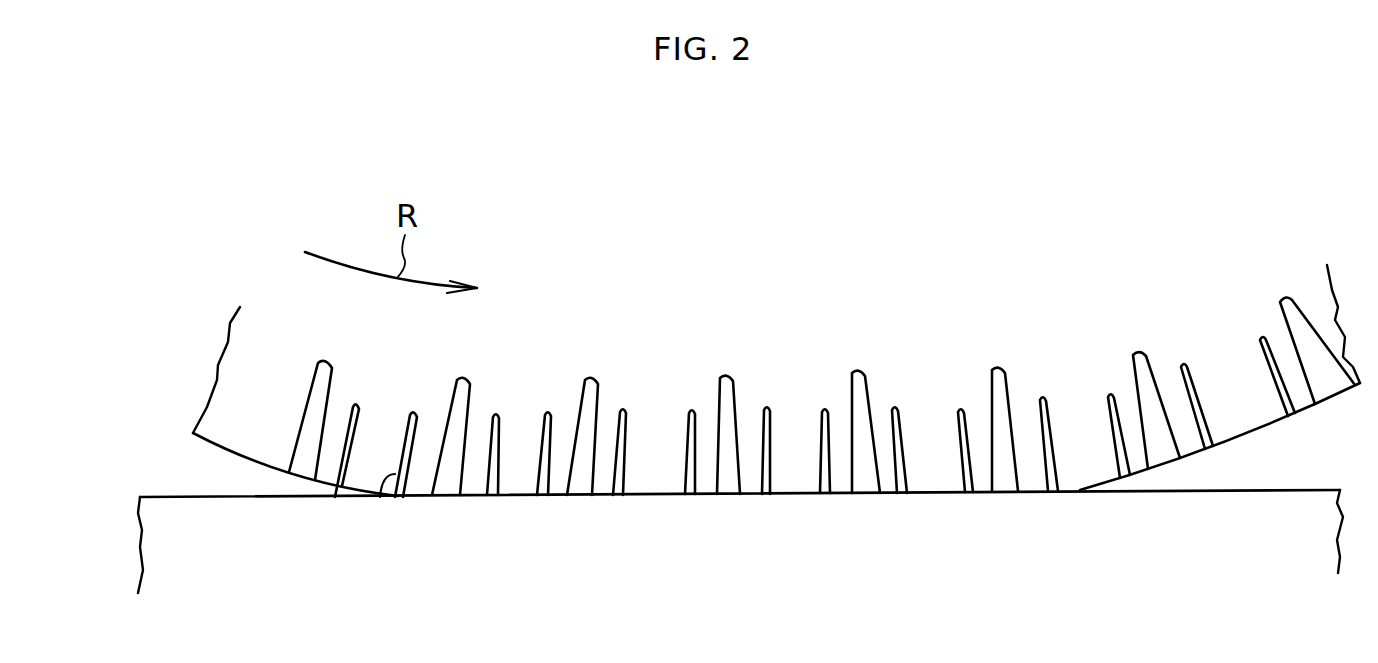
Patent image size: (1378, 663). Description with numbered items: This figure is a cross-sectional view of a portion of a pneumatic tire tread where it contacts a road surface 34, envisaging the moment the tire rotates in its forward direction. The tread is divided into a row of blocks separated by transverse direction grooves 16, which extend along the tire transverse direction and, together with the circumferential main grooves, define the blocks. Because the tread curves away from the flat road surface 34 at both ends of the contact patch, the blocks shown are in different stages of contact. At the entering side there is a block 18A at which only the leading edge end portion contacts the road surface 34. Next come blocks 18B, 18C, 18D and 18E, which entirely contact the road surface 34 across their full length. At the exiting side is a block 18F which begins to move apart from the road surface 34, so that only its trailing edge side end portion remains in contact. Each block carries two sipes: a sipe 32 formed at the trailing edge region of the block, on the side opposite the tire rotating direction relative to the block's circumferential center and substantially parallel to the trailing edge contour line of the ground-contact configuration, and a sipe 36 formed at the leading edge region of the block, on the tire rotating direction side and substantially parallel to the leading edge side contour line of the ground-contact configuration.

The transverse direction grooves 16 is at (297, 461).
The block 18A is at (418, 392).
The block 18B is at (491, 425).
The block 18C is at (631, 425).
The block 18D is at (773, 423).
The block 18E is at (912, 422).
The block 18F is at (1061, 419).
The sipe 32 is at (335, 497).
The road surface 34 is at (158, 496).
The sipe 36 is at (380, 497).